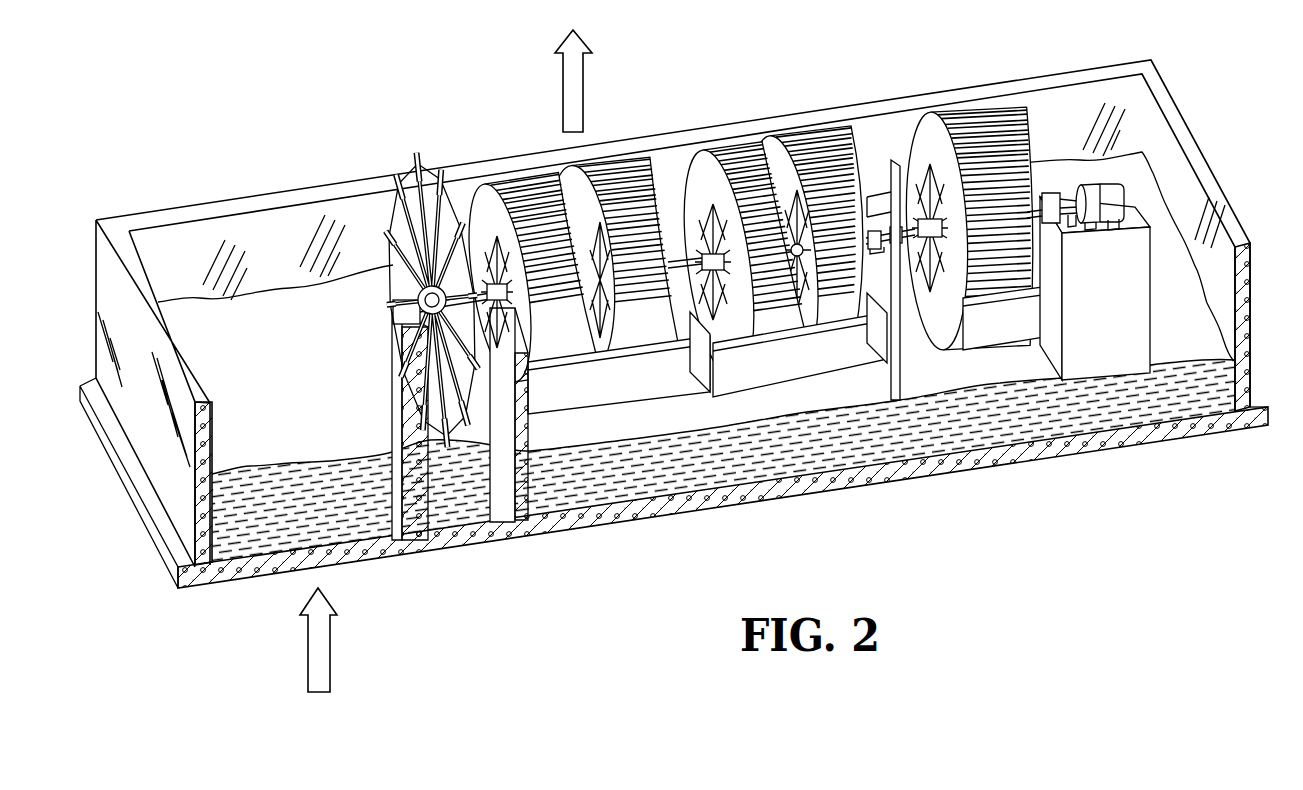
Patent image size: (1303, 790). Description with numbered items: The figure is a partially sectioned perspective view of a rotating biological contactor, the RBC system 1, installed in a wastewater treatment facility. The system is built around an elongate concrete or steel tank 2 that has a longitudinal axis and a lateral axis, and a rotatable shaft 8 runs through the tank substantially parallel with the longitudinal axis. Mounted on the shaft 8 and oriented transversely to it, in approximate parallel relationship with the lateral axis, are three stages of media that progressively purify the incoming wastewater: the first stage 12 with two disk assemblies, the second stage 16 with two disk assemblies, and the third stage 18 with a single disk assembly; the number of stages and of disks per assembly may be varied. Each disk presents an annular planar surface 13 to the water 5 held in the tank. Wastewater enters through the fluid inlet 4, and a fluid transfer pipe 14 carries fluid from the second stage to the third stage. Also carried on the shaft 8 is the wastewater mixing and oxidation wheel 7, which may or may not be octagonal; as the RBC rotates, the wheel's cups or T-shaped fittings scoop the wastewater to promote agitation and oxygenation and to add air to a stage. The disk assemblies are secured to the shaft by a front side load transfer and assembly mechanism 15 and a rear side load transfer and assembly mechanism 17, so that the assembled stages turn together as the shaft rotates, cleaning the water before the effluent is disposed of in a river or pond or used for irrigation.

The RBC system 1 is at (475, 560).
The elongate tank 2 is at (143, 392).
The wastewater inlet 4 is at (468, 222).
The water 5 is at (927, 377).
The wastewater mixing and oxidation wheel 7 is at (392, 213).
The rotatable shaft 8 is at (1073, 240).
The first stage 12 is at (537, 177).
The annular planar surface in disk 13 is at (793, 423).
The fluid transfer pipe from second stage to third stage 14 is at (880, 187).
The front side load transfer and assembly mechanism 15 is at (713, 207).
The second stage 16 is at (723, 150).
The rear side load transfer and assembly mechanism 17 is at (783, 193).
The third stage 18 is at (957, 110).